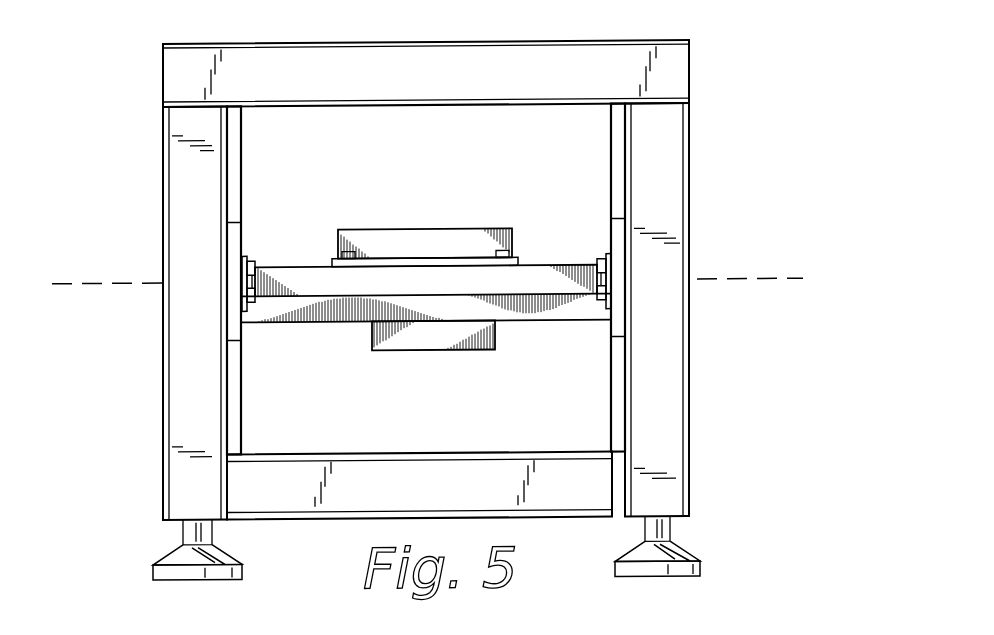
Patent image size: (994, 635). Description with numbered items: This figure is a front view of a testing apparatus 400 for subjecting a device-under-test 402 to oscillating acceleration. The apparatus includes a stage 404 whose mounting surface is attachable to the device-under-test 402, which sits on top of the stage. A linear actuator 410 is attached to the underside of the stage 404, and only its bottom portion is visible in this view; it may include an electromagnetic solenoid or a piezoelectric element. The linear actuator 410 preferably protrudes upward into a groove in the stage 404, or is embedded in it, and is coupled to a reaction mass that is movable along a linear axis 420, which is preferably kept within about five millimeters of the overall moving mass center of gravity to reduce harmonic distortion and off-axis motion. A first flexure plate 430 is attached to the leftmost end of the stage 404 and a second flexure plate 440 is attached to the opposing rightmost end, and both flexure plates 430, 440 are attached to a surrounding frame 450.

The testing apparatus 400 is at (113, 103).
The device-under-test 402 is at (437, 230).
The stage 404 is at (548, 267).
The linear actuator 410 is at (438, 353).
The linear axis 420 is at (760, 278).
The first flexure plate 430 is at (242, 136).
The second flexure plate 440 is at (611, 165).
The frame 450 is at (688, 123).